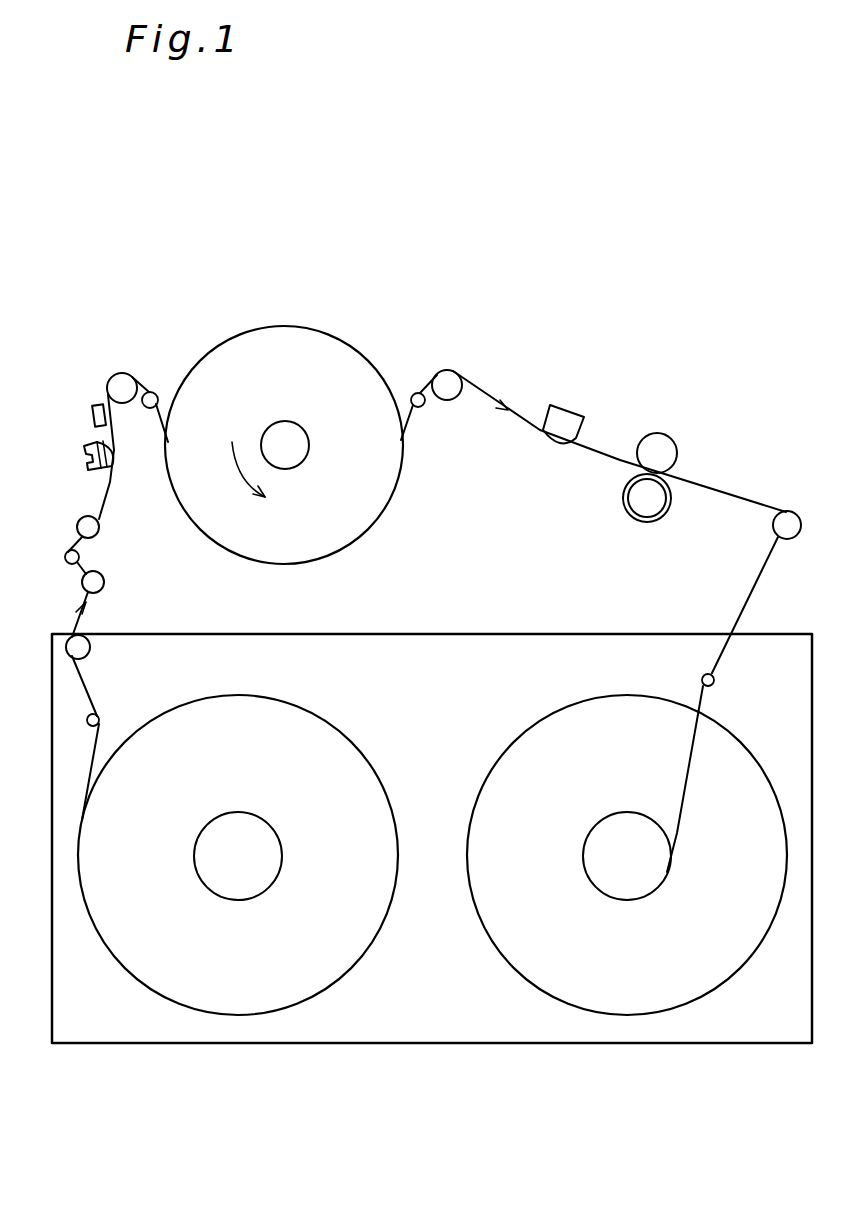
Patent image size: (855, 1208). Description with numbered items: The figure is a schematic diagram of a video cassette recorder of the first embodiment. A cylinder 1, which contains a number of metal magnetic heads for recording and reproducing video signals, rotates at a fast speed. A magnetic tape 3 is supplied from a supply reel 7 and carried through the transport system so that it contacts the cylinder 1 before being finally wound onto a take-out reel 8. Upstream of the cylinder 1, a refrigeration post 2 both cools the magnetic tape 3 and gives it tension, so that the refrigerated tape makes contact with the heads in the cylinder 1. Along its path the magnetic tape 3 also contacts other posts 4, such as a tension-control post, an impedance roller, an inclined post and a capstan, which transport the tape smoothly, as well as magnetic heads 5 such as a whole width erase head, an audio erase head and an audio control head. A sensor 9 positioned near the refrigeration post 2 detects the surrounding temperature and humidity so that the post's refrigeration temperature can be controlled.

The cylinder 1 is at (302, 333).
The refrigeration post 2 is at (88, 440).
The magnetic tape 3 is at (108, 491).
The posts 4 is at (123, 380).
The magnetic heads 5 is at (565, 416).
The supply reel 7 is at (244, 1015).
The take-out reel 8 is at (647, 1015).
The sensor 9 is at (102, 404).